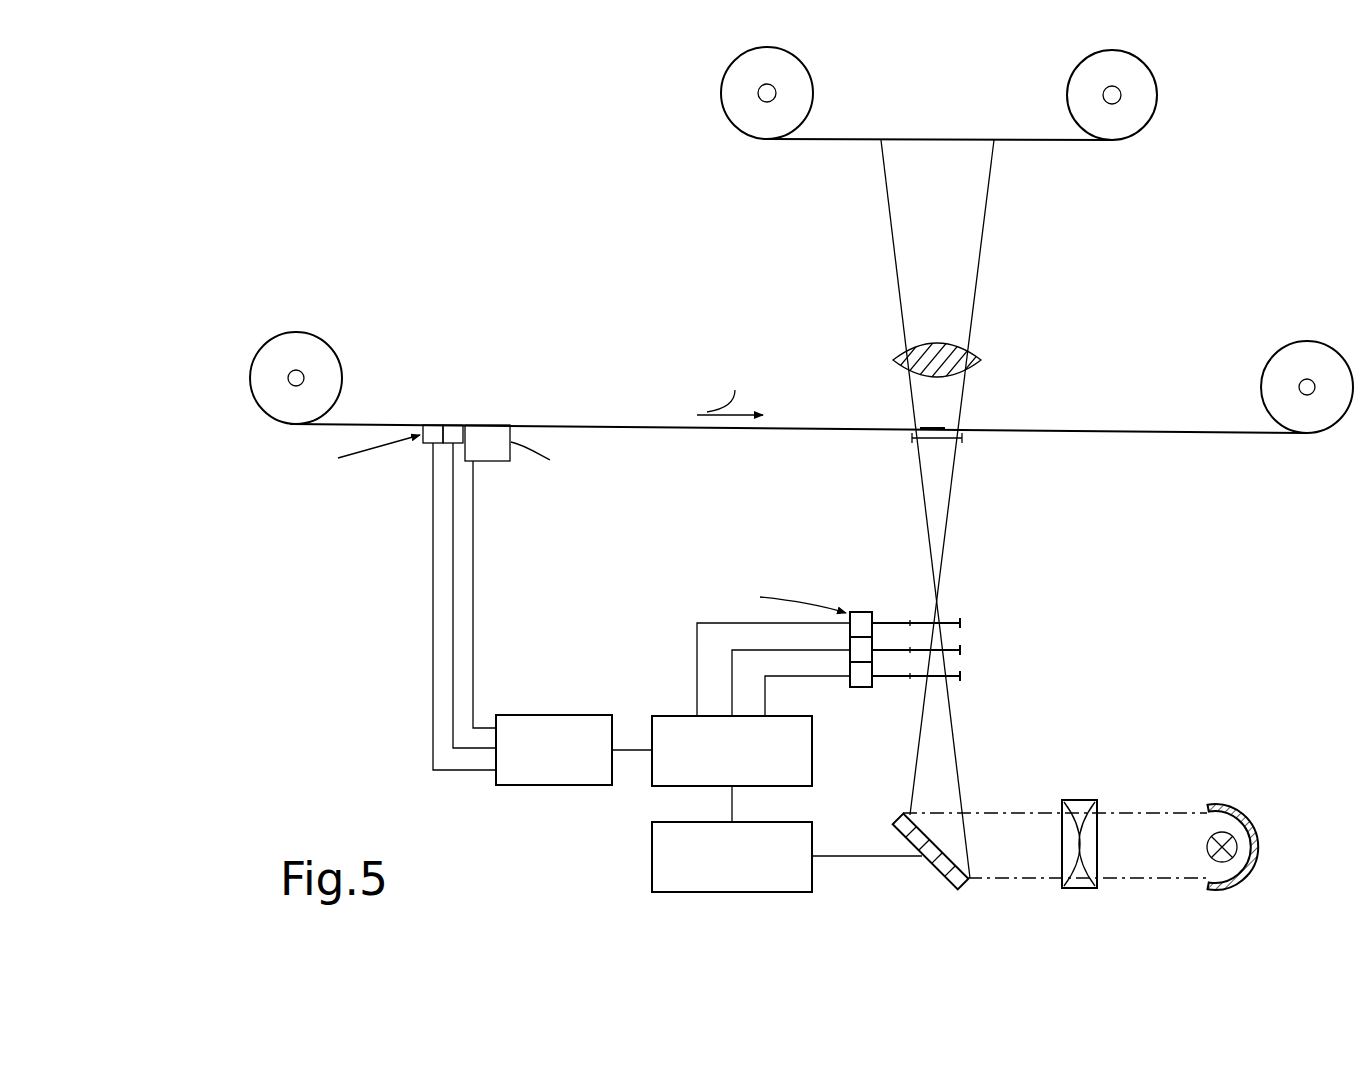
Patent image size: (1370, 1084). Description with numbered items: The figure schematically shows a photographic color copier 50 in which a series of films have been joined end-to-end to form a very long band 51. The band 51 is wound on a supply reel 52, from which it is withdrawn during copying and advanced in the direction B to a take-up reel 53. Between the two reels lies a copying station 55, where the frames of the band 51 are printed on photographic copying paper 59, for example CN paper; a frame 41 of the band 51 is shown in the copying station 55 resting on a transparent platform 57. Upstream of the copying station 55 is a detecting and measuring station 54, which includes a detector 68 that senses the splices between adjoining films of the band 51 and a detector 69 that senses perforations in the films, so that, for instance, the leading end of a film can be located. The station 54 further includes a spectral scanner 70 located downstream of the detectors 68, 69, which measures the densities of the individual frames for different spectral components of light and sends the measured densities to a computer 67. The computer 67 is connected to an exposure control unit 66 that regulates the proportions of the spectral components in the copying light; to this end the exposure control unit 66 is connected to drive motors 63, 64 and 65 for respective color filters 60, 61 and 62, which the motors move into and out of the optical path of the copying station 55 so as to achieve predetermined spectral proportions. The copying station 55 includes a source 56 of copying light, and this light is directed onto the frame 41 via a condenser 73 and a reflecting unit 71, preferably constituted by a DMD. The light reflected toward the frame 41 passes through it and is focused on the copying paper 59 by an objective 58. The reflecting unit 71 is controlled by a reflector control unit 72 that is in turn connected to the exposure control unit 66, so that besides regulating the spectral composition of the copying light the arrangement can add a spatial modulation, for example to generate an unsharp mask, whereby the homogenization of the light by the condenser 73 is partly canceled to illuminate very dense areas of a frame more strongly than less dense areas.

The photographic color copier 50 is at (410, 187).
The band 51 is at (1107, 430).
The supply reel 52 is at (290, 338).
The take-up reel 53 is at (1300, 342).
The detecting and measuring station 54 is at (340, 422).
The copying station 55 is at (963, 423).
The source of copying light 56 is at (1207, 847).
The transparent platform 57 is at (912, 443).
The objective 58 is at (898, 352).
The photographic copying paper 59 is at (1033, 143).
The color filter 60 is at (958, 622).
The color filter 61 is at (957, 650).
The color filter 62 is at (957, 678).
The drive motor 63 is at (865, 612).
The drive motor 64 is at (863, 648).
The drive motor 65 is at (860, 688).
The exposure control unit 66 is at (813, 765).
The computer 67 is at (572, 784).
The detector 68 is at (433, 424).
The detector 69 is at (455, 424).
The spectral scanner 70 is at (485, 424).
The reflecting unit 71 is at (943, 875).
The reflector control unit 72 is at (655, 845).
The condenser 73 is at (1099, 828).
The frame 41 is at (928, 427).